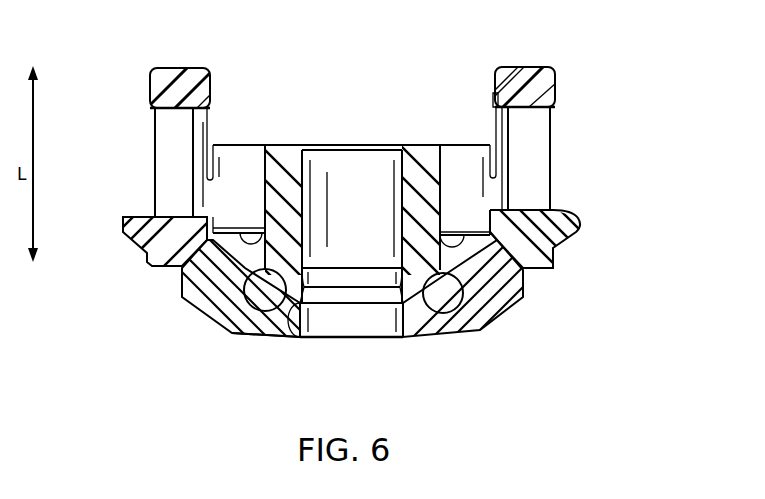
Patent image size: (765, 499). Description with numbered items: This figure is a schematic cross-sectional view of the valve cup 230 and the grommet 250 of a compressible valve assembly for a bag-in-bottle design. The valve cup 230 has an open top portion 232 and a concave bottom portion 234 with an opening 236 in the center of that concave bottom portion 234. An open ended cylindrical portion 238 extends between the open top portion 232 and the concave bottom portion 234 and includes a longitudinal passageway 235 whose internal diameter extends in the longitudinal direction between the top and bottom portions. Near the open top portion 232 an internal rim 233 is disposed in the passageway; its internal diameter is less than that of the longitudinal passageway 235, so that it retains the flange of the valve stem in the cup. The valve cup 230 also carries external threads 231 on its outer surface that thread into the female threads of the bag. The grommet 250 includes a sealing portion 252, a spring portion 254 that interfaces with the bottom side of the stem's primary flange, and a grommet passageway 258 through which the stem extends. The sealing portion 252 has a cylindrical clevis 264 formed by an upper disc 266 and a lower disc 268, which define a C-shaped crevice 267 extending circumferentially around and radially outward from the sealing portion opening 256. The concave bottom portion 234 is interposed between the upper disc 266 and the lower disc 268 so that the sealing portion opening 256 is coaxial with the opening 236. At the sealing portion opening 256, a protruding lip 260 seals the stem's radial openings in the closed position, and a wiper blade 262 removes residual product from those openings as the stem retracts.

The valve cup 230 is at (560, 148).
The external threads 231 is at (578, 223).
The open top portion 232 is at (530, 67).
The internal rim 233 is at (493, 103).
The concave bottom portion 234 is at (150, 278).
The longitudinal passageway 235 is at (370, 108).
The opening in the concave bottom portion 236 is at (463, 310).
The open ended cylindrical portion 238 is at (154, 140).
The grommet 250 is at (283, 157).
The sealing portion 252 is at (270, 337).
The spring portion 254 is at (263, 178).
The sealing portion opening 256 is at (352, 370).
The grommet passageway 258 is at (338, 130).
The protruding lip 260 is at (385, 337).
The wiper blade 262 is at (312, 337).
The cylindrical clevis 264 is at (228, 352).
The upper disc 266 is at (257, 243).
The C-shaped crevice 267 is at (217, 311).
The lower disc 268 is at (185, 285).